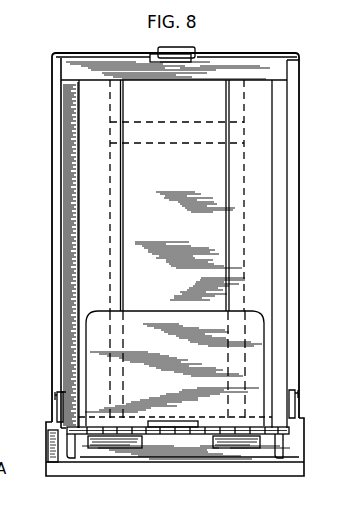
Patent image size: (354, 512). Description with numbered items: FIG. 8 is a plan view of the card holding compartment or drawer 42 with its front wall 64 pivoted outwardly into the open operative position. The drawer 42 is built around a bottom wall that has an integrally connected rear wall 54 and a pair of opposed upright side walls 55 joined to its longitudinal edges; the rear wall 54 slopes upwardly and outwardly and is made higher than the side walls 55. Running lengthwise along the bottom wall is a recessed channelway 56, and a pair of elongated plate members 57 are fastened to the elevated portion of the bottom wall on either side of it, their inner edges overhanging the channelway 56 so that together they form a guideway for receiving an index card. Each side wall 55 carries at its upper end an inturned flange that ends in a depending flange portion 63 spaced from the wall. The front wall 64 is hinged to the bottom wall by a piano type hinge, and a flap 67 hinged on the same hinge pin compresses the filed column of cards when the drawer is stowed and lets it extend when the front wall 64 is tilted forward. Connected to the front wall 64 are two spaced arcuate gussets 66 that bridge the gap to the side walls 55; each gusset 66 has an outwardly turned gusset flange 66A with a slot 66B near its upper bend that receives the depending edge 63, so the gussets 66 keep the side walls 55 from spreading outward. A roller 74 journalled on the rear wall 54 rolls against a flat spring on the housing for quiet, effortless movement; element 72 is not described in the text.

The card holding compartment 42 is at (300, 206).
The rear wall 54 is at (245, 53).
The side walls 55 is at (52, 271).
The channelway 56 is at (183, 230).
The elongated plate members 57 is at (100, 172).
The depending flange portion 63 is at (209, 433).
The front wall 64 is at (235, 466).
The gussets 66 is at (76, 412).
The gusset flange 66A is at (57, 400).
The slot 66B is at (59, 396).
The flap 67 is at (190, 318).
The cross member 72 is at (199, 127).
The roller 74 is at (180, 54).